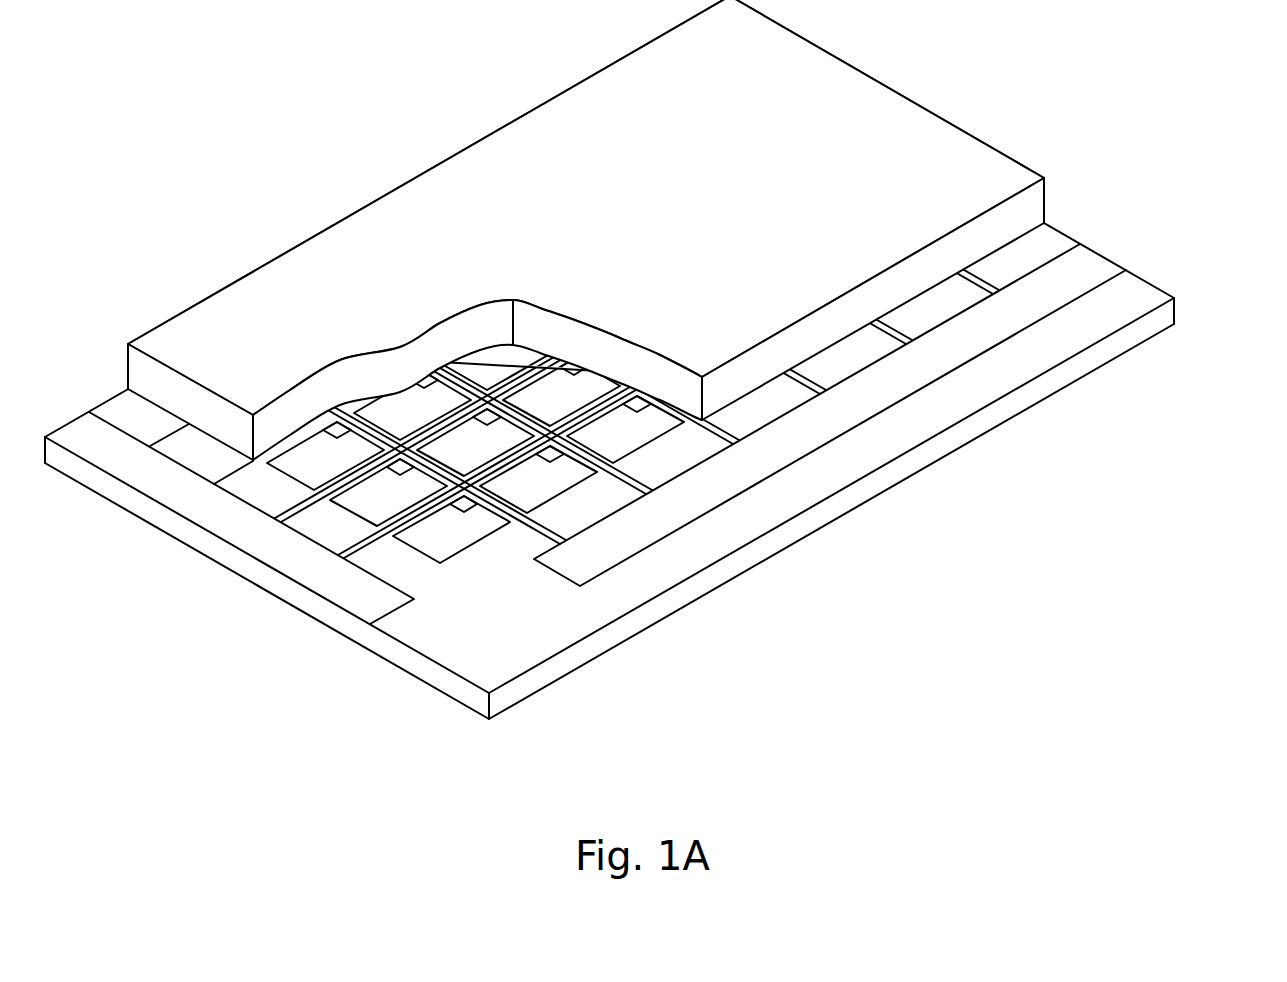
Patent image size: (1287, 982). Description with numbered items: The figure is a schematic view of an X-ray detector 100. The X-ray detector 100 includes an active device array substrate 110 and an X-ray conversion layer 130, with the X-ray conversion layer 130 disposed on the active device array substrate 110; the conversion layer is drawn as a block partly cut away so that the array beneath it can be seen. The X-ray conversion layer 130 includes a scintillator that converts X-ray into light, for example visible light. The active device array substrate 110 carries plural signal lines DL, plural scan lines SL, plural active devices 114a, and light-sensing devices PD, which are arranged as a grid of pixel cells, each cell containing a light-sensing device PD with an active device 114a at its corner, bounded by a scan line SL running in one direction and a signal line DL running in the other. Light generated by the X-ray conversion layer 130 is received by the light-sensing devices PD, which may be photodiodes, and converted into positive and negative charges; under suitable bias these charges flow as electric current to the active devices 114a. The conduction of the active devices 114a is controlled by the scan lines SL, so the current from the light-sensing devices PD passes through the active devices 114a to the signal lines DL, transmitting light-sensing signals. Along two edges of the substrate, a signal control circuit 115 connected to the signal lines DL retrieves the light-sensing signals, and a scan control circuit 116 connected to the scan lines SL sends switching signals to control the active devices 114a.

The X-ray detector 100 is at (101, 85).
The active device array substrate 110 is at (1160, 316).
The signal control circuit 115 is at (236, 523).
The scan control circuit 116 is at (848, 410).
The X-ray conversion layer 130 is at (1026, 212).
The scan lines SL is at (533, 531).
The signal lines DL is at (363, 546).
The light-sensing devices PD is at (428, 533).
The active devices 114a is at (465, 502).